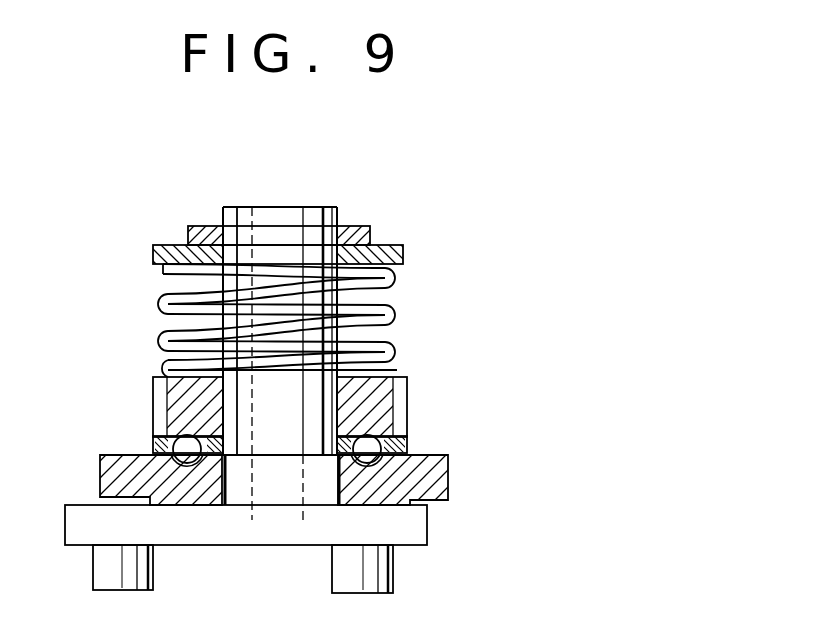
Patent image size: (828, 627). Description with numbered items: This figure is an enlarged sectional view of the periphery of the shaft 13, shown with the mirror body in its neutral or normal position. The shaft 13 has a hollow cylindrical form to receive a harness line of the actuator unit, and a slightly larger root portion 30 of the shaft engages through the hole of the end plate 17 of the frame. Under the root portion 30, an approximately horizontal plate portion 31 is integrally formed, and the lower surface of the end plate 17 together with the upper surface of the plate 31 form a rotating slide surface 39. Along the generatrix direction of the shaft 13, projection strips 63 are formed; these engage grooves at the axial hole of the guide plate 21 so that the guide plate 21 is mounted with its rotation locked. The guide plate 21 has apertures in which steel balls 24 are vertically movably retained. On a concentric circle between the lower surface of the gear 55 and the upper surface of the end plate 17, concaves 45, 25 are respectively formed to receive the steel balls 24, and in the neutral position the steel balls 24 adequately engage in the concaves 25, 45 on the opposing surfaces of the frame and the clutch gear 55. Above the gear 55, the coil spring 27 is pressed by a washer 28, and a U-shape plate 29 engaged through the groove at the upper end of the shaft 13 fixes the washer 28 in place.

The shaft 13 is at (318, 483).
The end plate 17 is at (430, 481).
The guide plate 21 is at (405, 448).
The steel balls 24 is at (170, 440).
The concave 25 is at (177, 470).
The coil spring 27 is at (393, 315).
The washer 28 is at (402, 257).
The U-shape plate 29 is at (355, 227).
The root portion 30 is at (233, 490).
The plate portion 31 is at (407, 533).
The rotating slide surface 39 is at (415, 507).
The concave 45 is at (187, 440).
The gear 55 is at (397, 393).
The projection strips 63 is at (227, 283).